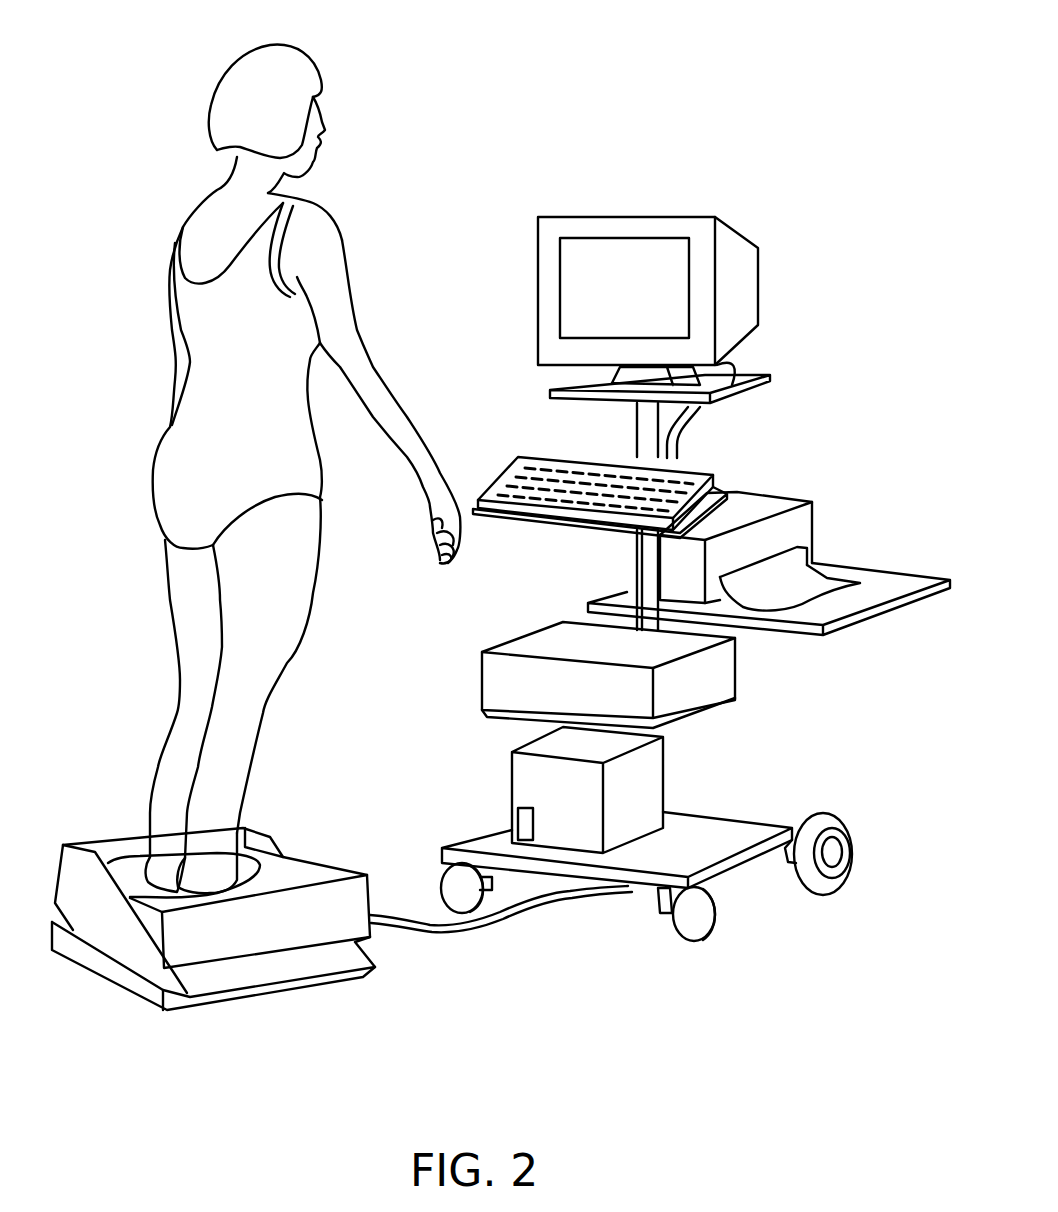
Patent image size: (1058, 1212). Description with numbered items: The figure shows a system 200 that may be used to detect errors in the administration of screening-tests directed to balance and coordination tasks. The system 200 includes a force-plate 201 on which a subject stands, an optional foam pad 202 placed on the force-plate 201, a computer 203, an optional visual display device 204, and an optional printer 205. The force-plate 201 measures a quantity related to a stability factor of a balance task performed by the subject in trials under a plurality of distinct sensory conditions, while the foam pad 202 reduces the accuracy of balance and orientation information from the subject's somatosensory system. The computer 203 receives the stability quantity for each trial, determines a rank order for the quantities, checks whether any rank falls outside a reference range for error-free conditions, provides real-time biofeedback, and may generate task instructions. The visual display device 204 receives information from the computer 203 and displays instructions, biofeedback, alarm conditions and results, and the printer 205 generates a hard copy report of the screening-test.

The system 200 is at (724, 87).
The force-plate 201 is at (270, 980).
The foam pad 202 is at (317, 873).
The computer 203 is at (727, 670).
The visual display device 204 is at (747, 285).
The printer 205 is at (807, 522).